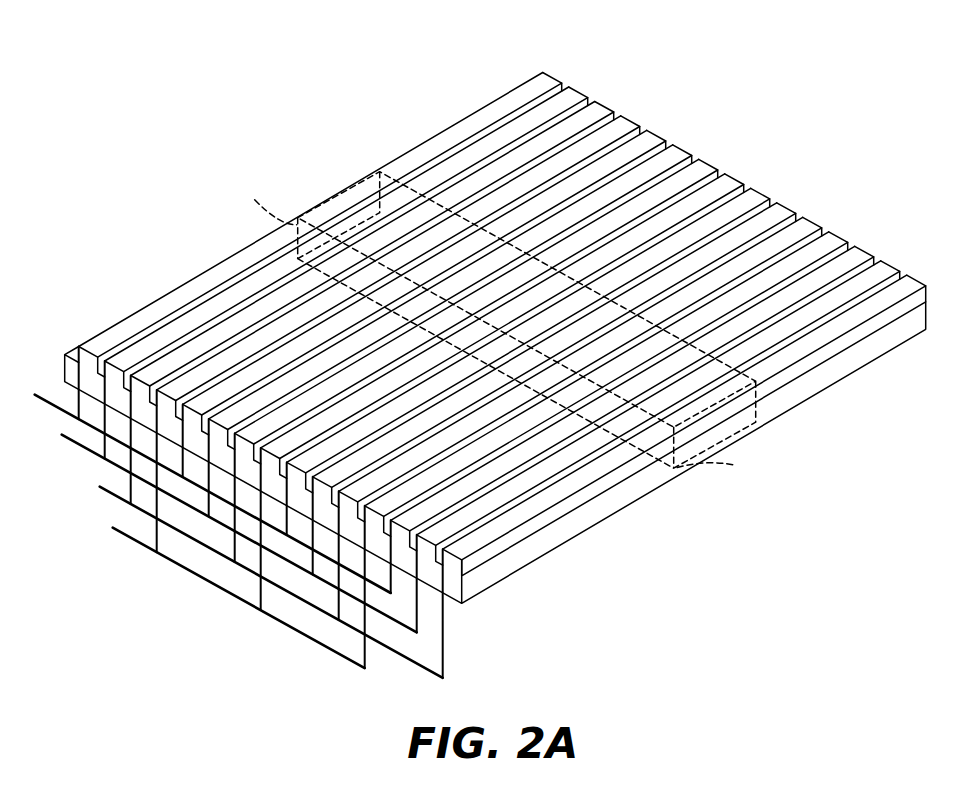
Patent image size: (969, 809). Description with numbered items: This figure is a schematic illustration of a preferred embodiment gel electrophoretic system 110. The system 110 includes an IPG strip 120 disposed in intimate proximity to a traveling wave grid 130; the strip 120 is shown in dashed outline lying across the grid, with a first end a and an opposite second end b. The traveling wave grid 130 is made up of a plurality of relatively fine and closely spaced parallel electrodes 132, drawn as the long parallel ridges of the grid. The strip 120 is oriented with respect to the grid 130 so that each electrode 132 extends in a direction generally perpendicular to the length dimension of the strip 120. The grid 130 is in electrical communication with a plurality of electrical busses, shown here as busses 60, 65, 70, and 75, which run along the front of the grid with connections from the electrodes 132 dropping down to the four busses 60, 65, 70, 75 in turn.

The gel electrophoretic system 110 is at (400, 103).
The IPG strip 120 is at (440, 203).
The traveling wave grid 130 is at (808, 226).
The electrode 132 is at (106, 332).
The electrical bus 60 is at (46, 403).
The electrical bus 65 is at (72, 447).
The electrical bus 70 is at (104, 494).
The electrical bus 75 is at (127, 538).